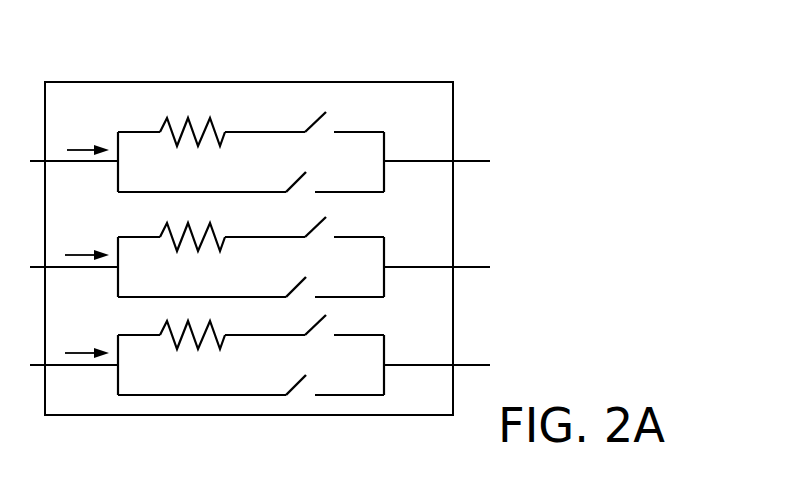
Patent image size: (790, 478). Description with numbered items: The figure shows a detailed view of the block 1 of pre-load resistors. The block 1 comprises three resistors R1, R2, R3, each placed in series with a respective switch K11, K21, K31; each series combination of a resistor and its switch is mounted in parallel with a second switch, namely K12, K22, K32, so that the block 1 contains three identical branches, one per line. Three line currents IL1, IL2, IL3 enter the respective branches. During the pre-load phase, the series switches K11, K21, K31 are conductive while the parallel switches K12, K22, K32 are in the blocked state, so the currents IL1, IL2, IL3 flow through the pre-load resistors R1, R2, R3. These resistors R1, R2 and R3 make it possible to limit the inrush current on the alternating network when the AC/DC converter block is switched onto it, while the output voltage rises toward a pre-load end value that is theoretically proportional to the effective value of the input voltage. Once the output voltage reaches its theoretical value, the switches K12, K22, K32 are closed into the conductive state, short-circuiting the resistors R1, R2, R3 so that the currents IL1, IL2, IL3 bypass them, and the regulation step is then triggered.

The block of pre-load resistors 1 is at (417, 97).
The current of first line IL1 is at (81, 137).
The current of second line IL2 is at (81, 241).
The current of third line IL3 is at (81, 340).
The pre-load resistor R1 is at (203, 120).
The pre-load resistor R2 is at (178, 230).
The pre-load resistor R3 is at (178, 324).
The switch K11 is at (313, 118).
The switch K12 is at (292, 180).
The switch K21 is at (303, 225).
The switch K22 is at (287, 283).
The switch K31 is at (303, 323).
The switch K32 is at (284, 382).